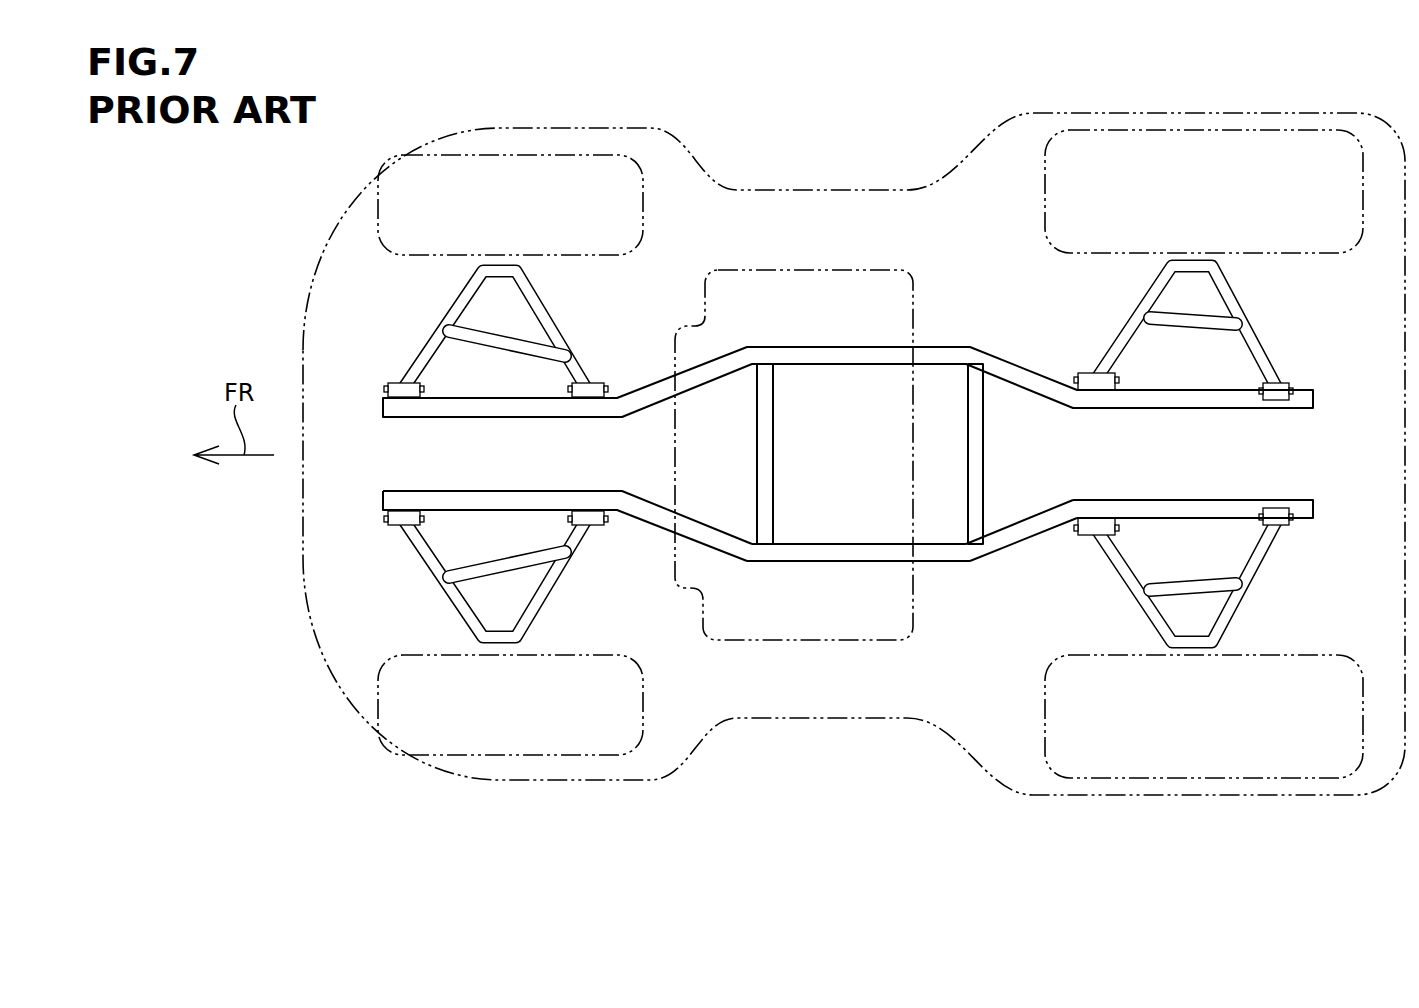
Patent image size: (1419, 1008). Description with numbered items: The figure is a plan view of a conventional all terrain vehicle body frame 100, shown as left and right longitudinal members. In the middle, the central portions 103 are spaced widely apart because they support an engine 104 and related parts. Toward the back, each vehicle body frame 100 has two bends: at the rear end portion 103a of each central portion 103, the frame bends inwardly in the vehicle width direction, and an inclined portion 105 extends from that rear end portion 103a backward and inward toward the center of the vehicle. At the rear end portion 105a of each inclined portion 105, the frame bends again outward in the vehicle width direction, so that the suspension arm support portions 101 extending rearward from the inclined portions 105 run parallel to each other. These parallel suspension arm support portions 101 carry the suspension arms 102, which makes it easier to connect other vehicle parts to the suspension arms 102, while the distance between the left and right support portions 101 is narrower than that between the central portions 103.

The vehicle body frame 100 is at (945, 347).
The suspension arm support portion 101 is at (1179, 521).
The suspension arm 102 is at (1261, 568).
The central portion 103 is at (817, 565).
The rear end portion of central portion 103a is at (977, 563).
The engine 104 is at (827, 267).
The inclined portion 105 is at (1027, 545).
The rear end portion of inclined portion 105a is at (1094, 499).